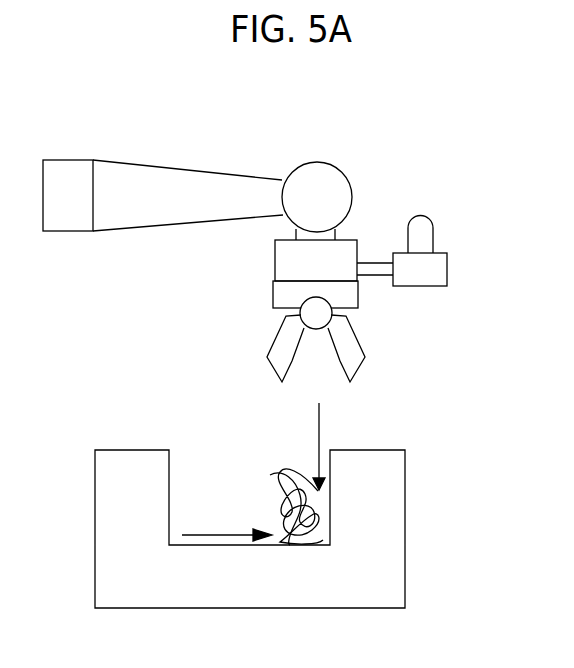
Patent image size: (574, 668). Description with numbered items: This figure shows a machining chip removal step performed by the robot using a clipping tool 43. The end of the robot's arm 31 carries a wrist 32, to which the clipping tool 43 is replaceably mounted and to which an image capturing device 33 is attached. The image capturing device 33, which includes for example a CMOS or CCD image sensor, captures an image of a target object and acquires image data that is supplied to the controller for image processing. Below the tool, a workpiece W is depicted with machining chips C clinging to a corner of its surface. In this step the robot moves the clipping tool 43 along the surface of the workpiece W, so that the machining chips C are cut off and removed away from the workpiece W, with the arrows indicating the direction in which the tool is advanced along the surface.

The arm 31 is at (165, 167).
The wrist 32 is at (275, 263).
The image capturing device 33 is at (447, 268).
The clipping tool 43 is at (358, 340).
The machining chips C is at (260, 450).
The workpiece W is at (405, 530).